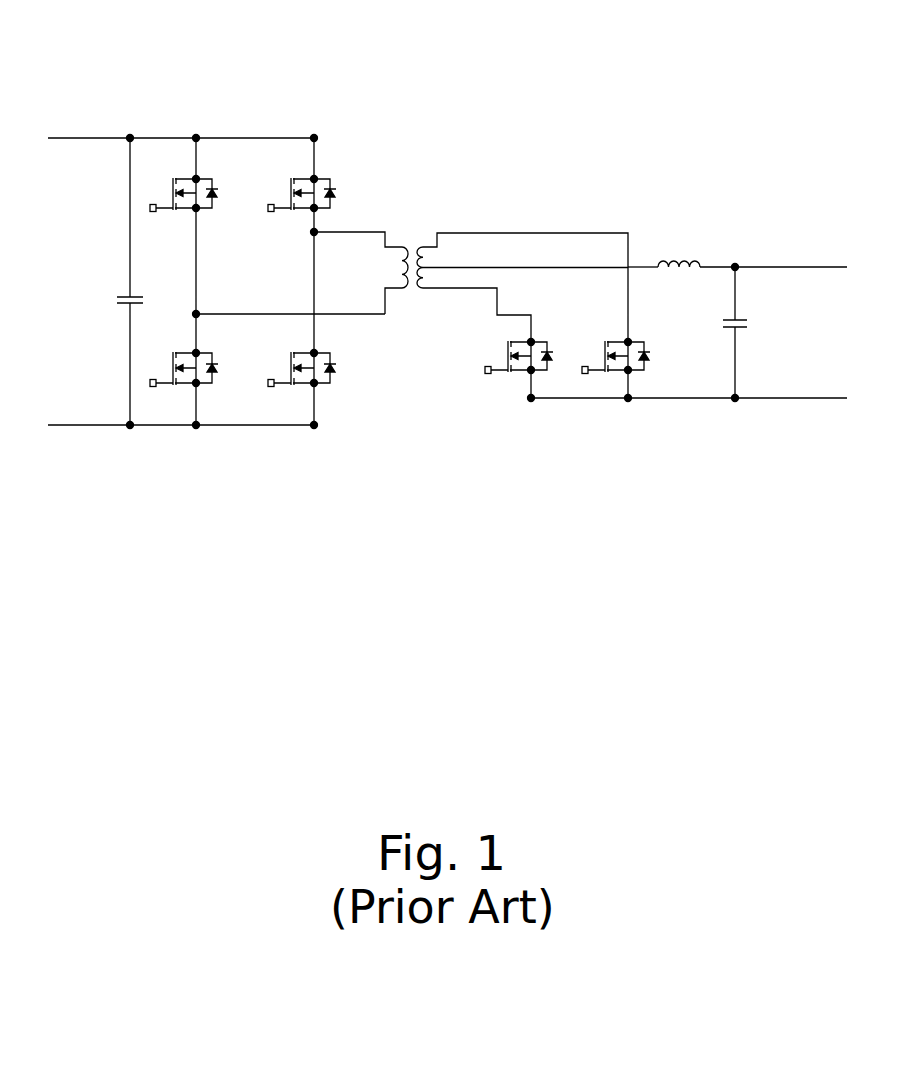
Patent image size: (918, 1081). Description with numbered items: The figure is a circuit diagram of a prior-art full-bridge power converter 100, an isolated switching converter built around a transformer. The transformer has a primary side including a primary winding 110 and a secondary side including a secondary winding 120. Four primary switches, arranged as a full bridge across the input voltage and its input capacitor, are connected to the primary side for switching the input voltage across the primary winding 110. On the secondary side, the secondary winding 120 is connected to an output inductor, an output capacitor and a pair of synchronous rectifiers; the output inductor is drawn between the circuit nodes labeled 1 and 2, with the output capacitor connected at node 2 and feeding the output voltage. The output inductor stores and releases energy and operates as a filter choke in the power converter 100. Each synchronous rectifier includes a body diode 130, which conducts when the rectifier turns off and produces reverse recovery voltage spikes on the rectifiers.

The full-bridge power converter 100 is at (133, 58).
The primary winding 110 is at (398, 297).
The secondary winding 120 is at (425, 297).
The body diode 130 is at (549, 352).
The output inductor input node 1 is at (643, 256).
The output node 2 is at (725, 258).